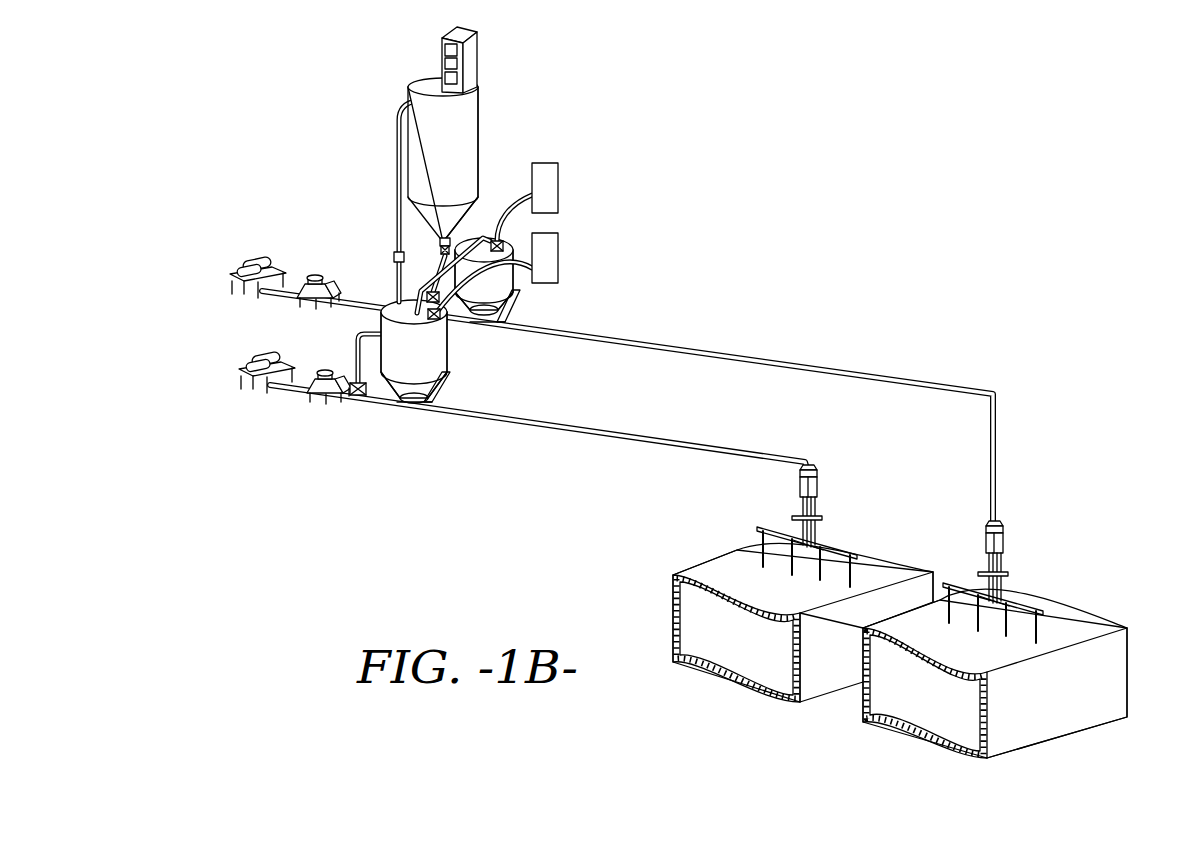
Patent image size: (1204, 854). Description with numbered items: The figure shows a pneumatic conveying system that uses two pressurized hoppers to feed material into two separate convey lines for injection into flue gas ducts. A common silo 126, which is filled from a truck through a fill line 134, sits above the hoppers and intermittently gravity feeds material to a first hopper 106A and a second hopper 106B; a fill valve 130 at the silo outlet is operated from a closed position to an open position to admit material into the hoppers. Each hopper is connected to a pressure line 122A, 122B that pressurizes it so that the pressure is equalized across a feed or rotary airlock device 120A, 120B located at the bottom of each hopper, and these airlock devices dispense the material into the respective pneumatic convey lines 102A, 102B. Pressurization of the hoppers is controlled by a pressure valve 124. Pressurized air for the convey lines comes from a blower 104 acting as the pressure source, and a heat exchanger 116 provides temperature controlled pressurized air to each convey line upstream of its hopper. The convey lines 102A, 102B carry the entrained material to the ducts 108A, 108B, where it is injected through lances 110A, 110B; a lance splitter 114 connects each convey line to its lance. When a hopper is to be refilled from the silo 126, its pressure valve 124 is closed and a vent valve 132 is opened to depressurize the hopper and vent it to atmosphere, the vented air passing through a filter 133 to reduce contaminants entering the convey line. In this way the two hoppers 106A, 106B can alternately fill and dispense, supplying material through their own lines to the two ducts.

The pneumatic convey line 102A is at (678, 438).
The pneumatic convey line 102B is at (763, 357).
The blower 104 is at (258, 253).
The hopper 106A is at (431, 352).
The hopper 106B is at (560, 264).
The flue gas duct 108A is at (723, 570).
The flue gas duct 108B is at (1087, 630).
The lance 110A is at (827, 543).
The lance 110B is at (1008, 600).
The lance splitter 114 is at (800, 483).
The heat exchanger 116 is at (312, 277).
The rotary airlock device 120A is at (450, 377).
The rotary airlock device 120B is at (518, 297).
The pressure line 122A is at (357, 332).
The pressure line 122B is at (432, 253).
The pressure valve 124 is at (368, 394).
The silo 126 is at (486, 115).
The fill valve 130 is at (417, 192).
The vent valve 132 is at (498, 243).
The filter 133 is at (560, 172).
The fill line 134 is at (395, 140).